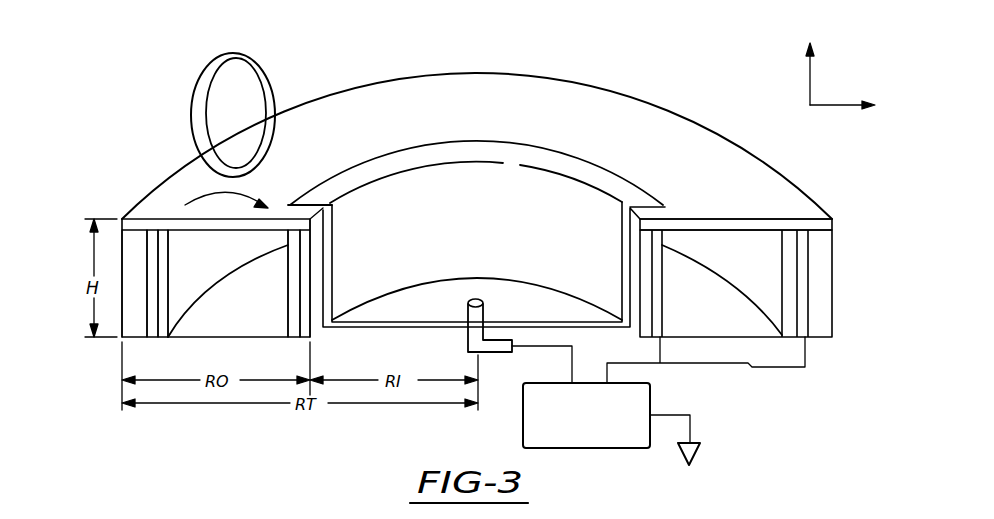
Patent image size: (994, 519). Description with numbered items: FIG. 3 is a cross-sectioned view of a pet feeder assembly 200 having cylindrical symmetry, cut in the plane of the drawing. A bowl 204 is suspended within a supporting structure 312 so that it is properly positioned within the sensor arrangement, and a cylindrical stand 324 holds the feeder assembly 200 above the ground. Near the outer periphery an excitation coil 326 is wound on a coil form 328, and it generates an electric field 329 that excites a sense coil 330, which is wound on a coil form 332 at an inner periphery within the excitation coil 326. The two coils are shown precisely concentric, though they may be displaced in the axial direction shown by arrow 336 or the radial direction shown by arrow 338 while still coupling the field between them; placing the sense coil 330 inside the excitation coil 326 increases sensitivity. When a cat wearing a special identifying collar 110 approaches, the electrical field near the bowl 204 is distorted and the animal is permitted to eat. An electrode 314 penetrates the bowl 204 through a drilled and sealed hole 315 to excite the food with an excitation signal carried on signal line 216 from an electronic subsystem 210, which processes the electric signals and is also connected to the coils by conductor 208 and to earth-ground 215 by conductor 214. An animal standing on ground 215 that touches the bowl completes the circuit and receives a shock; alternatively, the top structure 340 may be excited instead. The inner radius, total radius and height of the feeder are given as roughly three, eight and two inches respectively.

The identifying collar 110 is at (257, 54).
The feeder assembly 200 is at (138, 176).
The bowl 204 is at (614, 164).
The conductor 208 is at (752, 370).
The electronic subsystem 210 is at (650, 390).
The conductor 214 is at (690, 426).
The earth-ground 215 is at (700, 445).
The signal line 216 is at (572, 365).
The supporting structure 312 is at (796, 175).
The electrode 314 is at (485, 303).
The hole 315 is at (468, 318).
The cylindrical stand 324 is at (137, 340).
The excitation coil 326 is at (150, 341).
The coil form 328 is at (176, 321).
The electric field 329 is at (232, 196).
The sense coil 330 is at (292, 340).
The coil form 332 is at (303, 340).
The axial direction arrow 336 is at (812, 76).
The radial direction arrow 338 is at (821, 104).
The top structure 340 is at (688, 192).